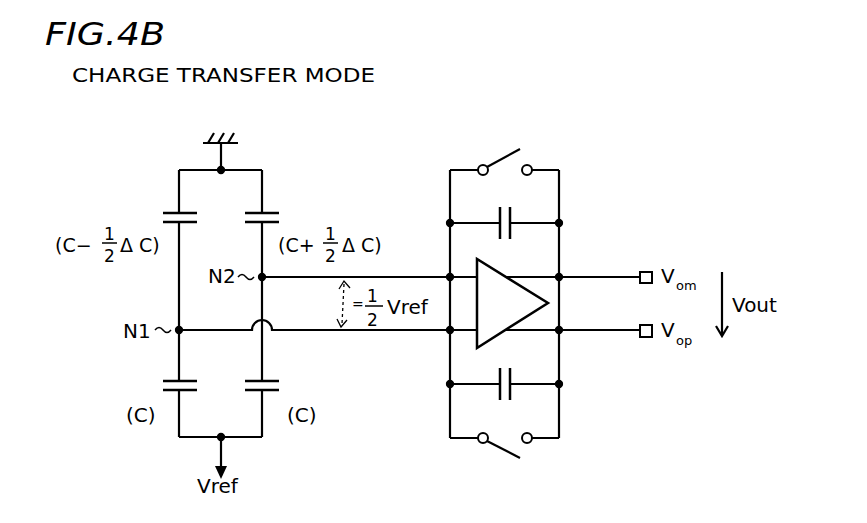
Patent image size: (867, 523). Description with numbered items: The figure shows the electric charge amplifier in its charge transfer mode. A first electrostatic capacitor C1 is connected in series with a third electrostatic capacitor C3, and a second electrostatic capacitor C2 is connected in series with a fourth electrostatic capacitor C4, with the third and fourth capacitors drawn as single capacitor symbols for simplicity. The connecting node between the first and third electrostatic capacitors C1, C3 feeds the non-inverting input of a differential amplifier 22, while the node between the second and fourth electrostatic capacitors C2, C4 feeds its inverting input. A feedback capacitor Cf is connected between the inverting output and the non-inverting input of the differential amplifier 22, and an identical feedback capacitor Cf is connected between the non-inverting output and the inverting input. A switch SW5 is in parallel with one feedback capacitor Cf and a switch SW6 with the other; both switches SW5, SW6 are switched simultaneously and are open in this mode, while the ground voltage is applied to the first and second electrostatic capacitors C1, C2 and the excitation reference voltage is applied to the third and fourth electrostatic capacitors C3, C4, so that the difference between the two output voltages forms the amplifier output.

The differential amplifier 22 is at (555, 307).
The first electrostatic capacitor C1 is at (280, 216).
The second electrostatic capacitor C2 is at (162, 216).
The third electrostatic capacitor C3 is at (280, 385).
The fourth electrostatic capacitor C4 is at (162, 385).
The switch SW5 is at (505, 146).
The switch SW6 is at (505, 462).
The feedback capacitor Cf is at (517, 299).